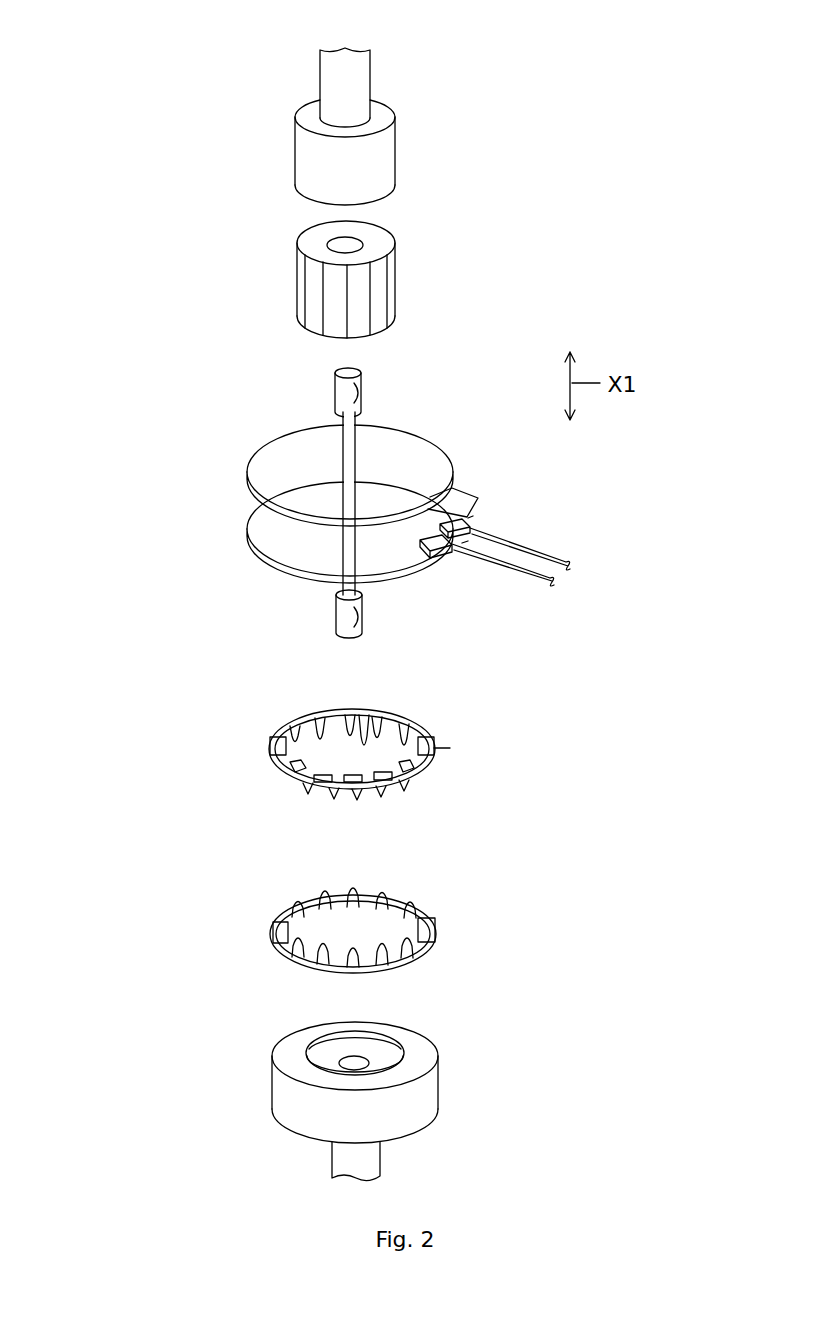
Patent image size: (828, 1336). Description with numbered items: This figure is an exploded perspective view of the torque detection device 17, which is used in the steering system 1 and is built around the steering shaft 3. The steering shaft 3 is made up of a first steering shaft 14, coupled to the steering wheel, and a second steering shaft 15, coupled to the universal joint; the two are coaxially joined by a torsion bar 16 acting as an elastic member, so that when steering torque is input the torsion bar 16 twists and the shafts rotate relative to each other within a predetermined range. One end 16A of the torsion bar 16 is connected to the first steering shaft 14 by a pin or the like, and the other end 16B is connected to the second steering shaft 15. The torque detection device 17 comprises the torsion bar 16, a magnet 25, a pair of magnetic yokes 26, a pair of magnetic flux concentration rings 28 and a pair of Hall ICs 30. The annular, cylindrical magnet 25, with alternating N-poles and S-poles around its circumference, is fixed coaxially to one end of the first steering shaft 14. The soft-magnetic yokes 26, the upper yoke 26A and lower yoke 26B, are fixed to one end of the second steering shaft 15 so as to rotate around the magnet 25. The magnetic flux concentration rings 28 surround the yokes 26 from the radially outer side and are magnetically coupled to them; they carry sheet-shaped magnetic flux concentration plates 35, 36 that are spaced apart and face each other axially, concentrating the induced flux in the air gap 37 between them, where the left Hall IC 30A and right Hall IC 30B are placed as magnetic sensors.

The motor 1 is at (399, 60).
The steering shaft 3 is at (404, 614).
The first steering shaft 14 is at (380, 160).
The second steering shaft 15 is at (422, 1095).
The torsion bar 16 is at (356, 465).
The one end of the torsion bar 16A is at (358, 382).
The other end of the torsion bar 16B is at (358, 628).
The torque detection device 17 is at (154, 742).
The magnet 25 is at (387, 286).
The magnetic yokes 26 is at (385, 838).
The upper magnetic yoke 26A is at (394, 753).
The lower magnetic yoke 26B is at (385, 928).
The magnetic flux concentration rings 28 is at (302, 503).
The Hall ICs 30 is at (506, 556).
The left Hall IC 30A is at (427, 552).
The right Hall IC 30B is at (462, 530).
The magnetic flux concentration plate 35 is at (460, 497).
The magnetic flux concentration plate 36 is at (467, 545).
The air gap 37 is at (479, 519).